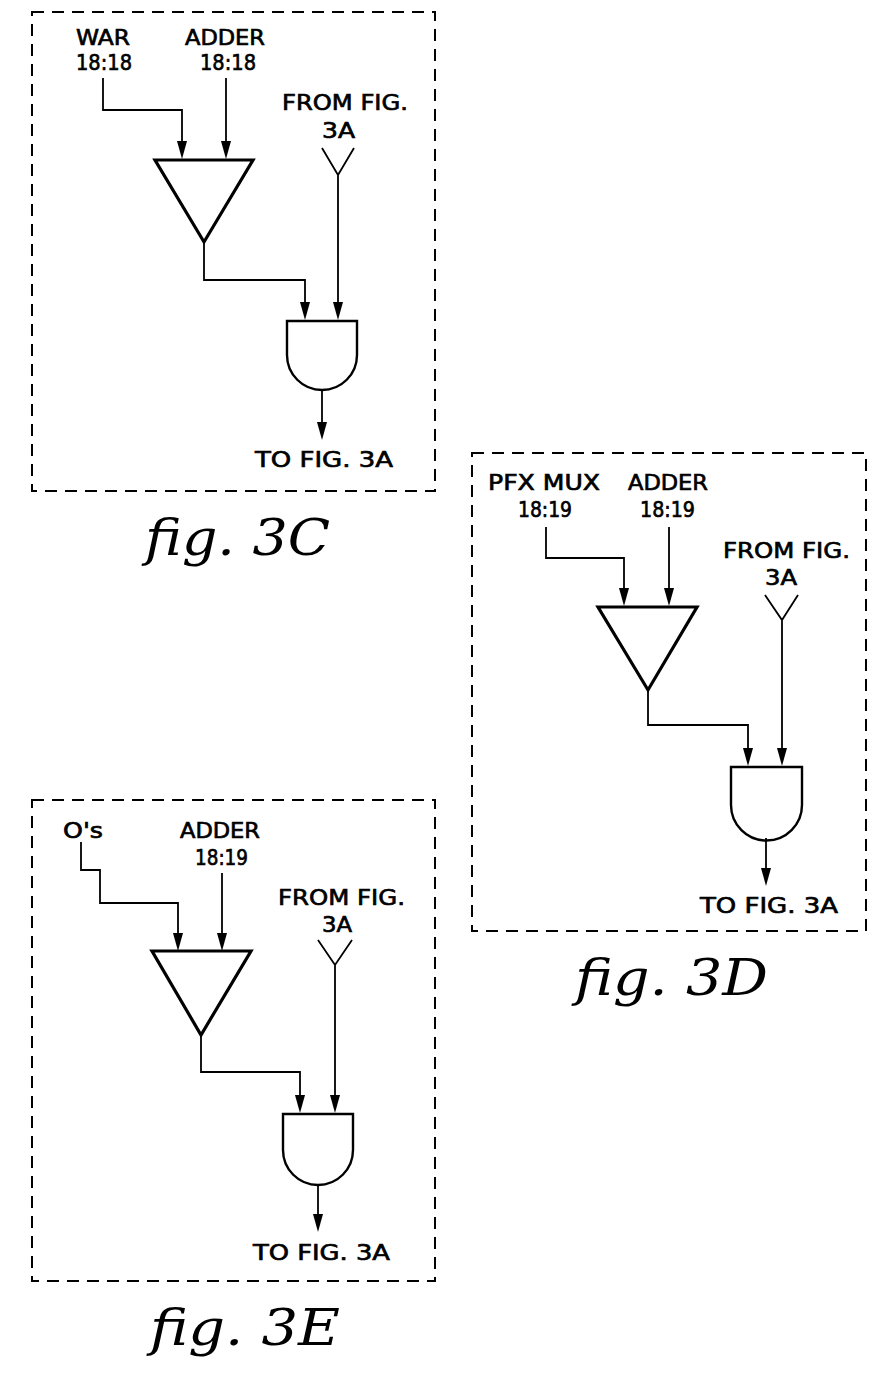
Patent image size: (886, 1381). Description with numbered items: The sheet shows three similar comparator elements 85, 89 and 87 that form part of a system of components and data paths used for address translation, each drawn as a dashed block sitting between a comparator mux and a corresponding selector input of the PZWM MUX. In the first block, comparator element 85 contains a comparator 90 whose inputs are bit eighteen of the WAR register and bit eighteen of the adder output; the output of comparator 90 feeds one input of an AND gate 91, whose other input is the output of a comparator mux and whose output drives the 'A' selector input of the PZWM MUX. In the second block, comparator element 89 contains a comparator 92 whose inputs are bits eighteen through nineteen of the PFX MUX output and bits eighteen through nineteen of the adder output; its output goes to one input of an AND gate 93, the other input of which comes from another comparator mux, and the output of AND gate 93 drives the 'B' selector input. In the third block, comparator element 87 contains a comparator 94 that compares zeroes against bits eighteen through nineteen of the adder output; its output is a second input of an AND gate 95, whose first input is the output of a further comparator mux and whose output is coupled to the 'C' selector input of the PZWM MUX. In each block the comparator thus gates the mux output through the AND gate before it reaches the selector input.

In FIG. 3C, the comparator element 85 is at (437, 160).
In FIG. 3C, the comparator 90 is at (172, 190).
In FIG. 3C, the AND gate 91 is at (287, 338).
In FIG. 3D, the comparator element 89 is at (770, 453).
In FIG. 3D, the comparator 92 is at (615, 638).
In FIG. 3D, the AND gate 93 is at (731, 784).
In FIG. 3E, the comparator element 87 is at (436, 1084).
In FIG. 3E, the comparator 94 is at (169, 982).
In FIG. 3E, the AND gate 95 is at (283, 1130).